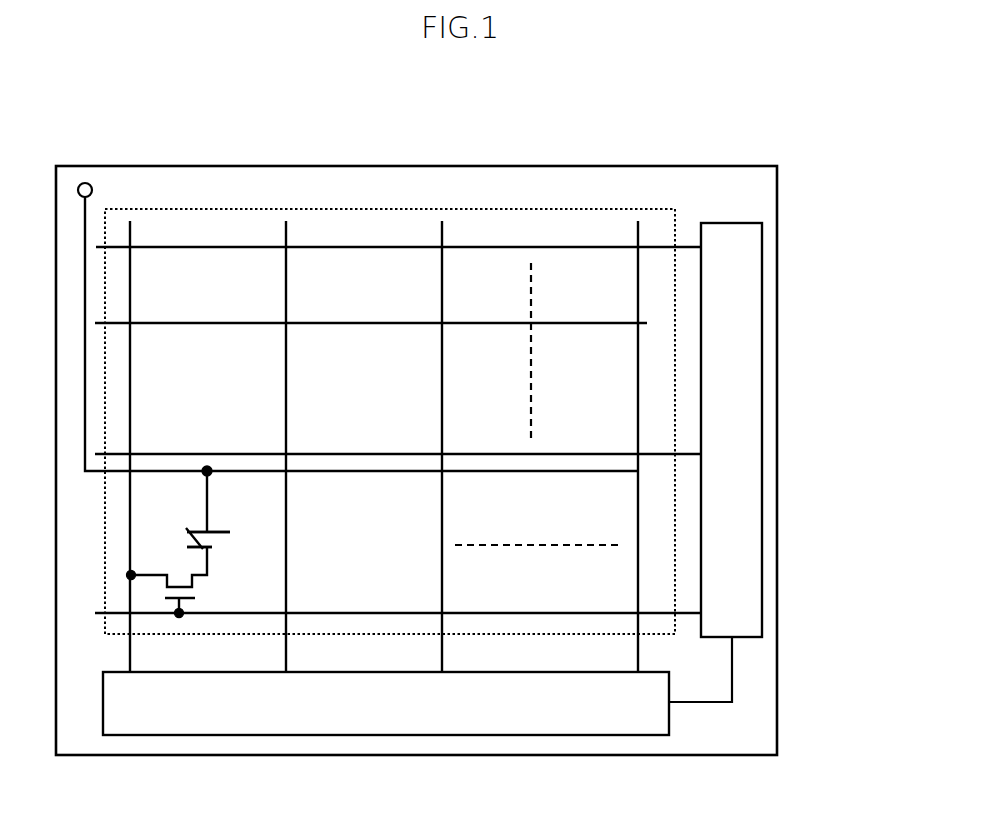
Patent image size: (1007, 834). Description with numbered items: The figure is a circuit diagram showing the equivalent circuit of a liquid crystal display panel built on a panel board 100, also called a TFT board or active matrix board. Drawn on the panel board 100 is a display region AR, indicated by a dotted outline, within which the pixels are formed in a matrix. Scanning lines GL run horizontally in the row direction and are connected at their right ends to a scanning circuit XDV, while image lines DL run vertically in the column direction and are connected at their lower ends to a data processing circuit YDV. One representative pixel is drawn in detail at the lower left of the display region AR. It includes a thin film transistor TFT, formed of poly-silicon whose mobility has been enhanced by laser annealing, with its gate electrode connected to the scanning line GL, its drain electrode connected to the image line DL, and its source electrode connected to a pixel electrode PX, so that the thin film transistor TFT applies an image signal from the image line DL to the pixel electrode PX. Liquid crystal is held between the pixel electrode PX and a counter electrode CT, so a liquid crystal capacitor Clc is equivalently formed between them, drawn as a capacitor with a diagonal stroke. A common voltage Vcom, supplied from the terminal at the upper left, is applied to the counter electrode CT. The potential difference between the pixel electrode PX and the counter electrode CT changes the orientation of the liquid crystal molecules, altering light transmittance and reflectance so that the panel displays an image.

The panel board 100 is at (601, 166).
The display region AR is at (417, 213).
The scanning circuit XDV is at (748, 338).
The data processing circuit YDV is at (480, 715).
The image line DL is at (130, 438).
The scanning line GL is at (306, 452).
The common voltage Vcom is at (358, 328).
The counter electrode CT is at (212, 531).
The liquid crystal capacitor Clc is at (195, 526).
The pixel electrode PX is at (215, 547).
The thin film transistor TFT is at (195, 594).